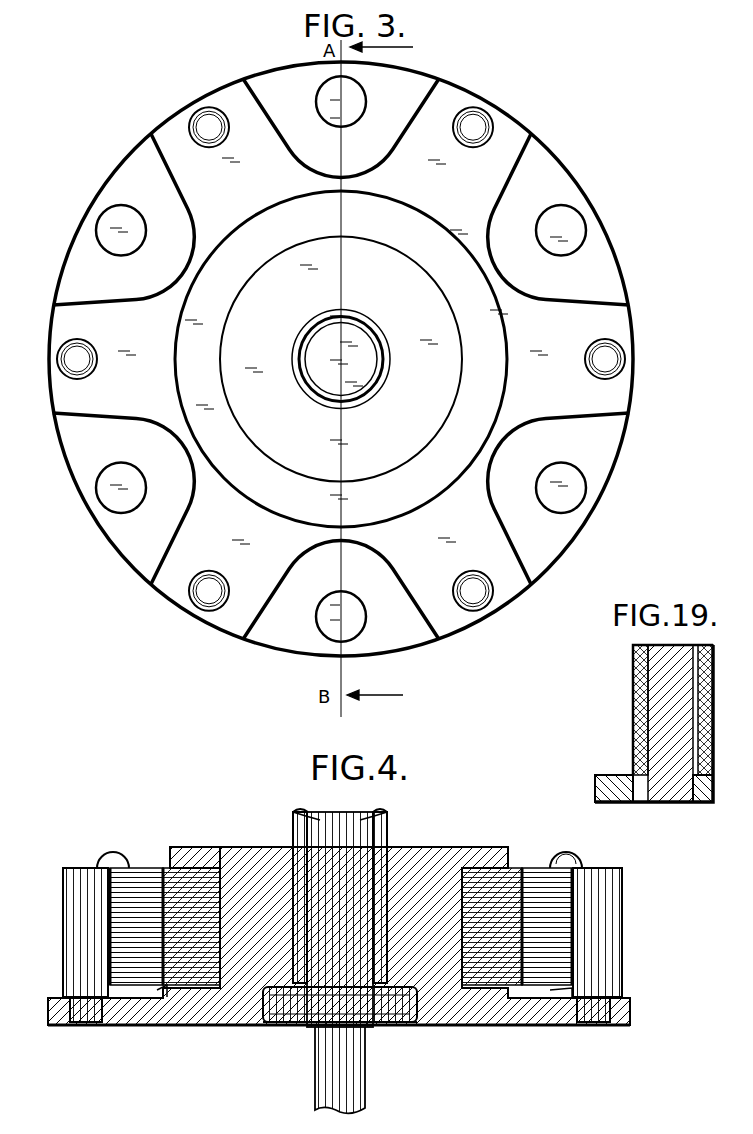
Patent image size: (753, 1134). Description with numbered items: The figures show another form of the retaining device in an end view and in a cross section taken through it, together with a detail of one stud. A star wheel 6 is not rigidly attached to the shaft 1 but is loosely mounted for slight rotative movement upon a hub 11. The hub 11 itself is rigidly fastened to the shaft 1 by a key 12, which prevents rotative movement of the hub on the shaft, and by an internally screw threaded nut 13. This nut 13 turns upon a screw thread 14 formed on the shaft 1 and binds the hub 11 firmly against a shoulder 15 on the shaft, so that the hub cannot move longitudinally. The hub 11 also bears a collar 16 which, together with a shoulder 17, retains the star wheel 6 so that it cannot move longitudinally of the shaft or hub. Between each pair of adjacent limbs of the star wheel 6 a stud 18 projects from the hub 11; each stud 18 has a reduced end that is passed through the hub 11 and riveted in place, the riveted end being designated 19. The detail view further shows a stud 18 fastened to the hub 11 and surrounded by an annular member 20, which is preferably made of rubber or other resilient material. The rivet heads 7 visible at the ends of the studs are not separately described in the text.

In FIG. 4, the shaft 1 is at (323, 1045).
In FIG. 3, the star wheel 6 is at (525, 412).
In FIG. 4, the star wheel 6 is at (528, 868).
In FIG. 3, the rivet 7 is at (72, 362).
In FIG. 4, the rivet 7 is at (571, 855).
In FIG. 3, the hub 11 is at (625, 268).
In FIG. 4, the hub 11 is at (422, 847).
In FIG. 19, the hub 11 is at (630, 795).
In FIG. 3, the key 12 is at (343, 403).
In FIG. 4, the key 12 is at (295, 847).
In FIG. 4, the internally screw threaded nut 13 is at (272, 1030).
In FIG. 4, the screw thread 14 is at (372, 1027).
In FIG. 4, the shoulder 15 is at (387, 845).
In FIG. 3, the collar 16 is at (341, 359).
In FIG. 4, the collar 16 is at (168, 853).
In FIG. 4, the shoulder 17 is at (167, 990).
In FIG. 3, the stud 18 is at (107, 492).
In FIG. 4, the stud 18 is at (62, 872).
In FIG. 19, the stud 18 is at (677, 790).
In FIG. 4, the riveted end 19 is at (72, 1023).
In FIG. 19, the annular member 20 is at (643, 673).